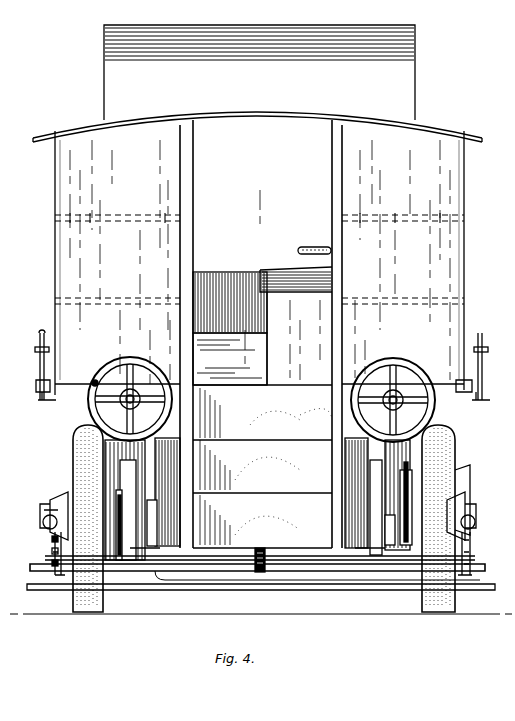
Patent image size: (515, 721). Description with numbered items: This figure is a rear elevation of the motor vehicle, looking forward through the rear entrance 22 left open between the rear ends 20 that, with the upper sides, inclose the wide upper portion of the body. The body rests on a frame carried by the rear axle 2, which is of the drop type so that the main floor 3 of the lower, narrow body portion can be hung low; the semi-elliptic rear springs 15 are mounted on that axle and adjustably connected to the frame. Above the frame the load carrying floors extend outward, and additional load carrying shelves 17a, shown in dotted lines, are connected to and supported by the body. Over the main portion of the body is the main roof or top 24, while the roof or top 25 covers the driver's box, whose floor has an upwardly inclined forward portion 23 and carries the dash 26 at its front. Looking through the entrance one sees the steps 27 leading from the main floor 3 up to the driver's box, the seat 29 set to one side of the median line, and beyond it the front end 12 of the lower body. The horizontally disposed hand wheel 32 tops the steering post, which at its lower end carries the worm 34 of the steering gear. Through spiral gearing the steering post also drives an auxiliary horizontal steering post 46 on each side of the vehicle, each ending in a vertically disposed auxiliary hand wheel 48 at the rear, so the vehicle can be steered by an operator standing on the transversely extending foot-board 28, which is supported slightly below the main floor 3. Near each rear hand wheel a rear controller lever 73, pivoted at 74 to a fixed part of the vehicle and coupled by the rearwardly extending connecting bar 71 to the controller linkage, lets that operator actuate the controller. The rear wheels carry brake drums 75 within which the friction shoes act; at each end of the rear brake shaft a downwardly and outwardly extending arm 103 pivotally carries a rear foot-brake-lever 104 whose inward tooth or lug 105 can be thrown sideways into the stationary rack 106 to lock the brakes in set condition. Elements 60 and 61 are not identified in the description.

The rear axle 2 is at (236, 580).
The main floor 3 is at (252, 549).
The front end 12 is at (78, 380).
The rear springs 15 is at (150, 390).
The load carrying frames or shelves 17a is at (127, 217).
The rear ends 20 is at (259, 260).
The rear entrance 22 is at (259, 334).
The inclined forward portion of driver's box floor 23 is at (230, 359).
The main roof or top 24 is at (258, 118).
The roof or top of driver's box 25 is at (259, 72).
The dash 26 is at (228, 280).
The steps 27 is at (258, 461).
The foot-board 28 is at (307, 590).
The seat 29 is at (305, 292).
The hand wheel 32 is at (311, 247).
The worm 34 is at (483, 500).
The auxiliary horizontal steering post 46 is at (270, 407).
The auxiliary hand wheels 48 is at (89, 407).
The wheel 60 is at (122, 577).
The guide post 61 is at (180, 447).
The connecting bar 71 is at (36, 385).
The rear controller lever 73 is at (37, 352).
The pivot of rear controller lever 74 is at (46, 400).
The brake drums 75 is at (110, 485).
The downwardly and outwardly extending arm 103 is at (55, 578).
The rear foot-brake-lever 104 is at (52, 539).
The tooth or lug 105 is at (52, 551).
The stationary rack 106 is at (52, 563).